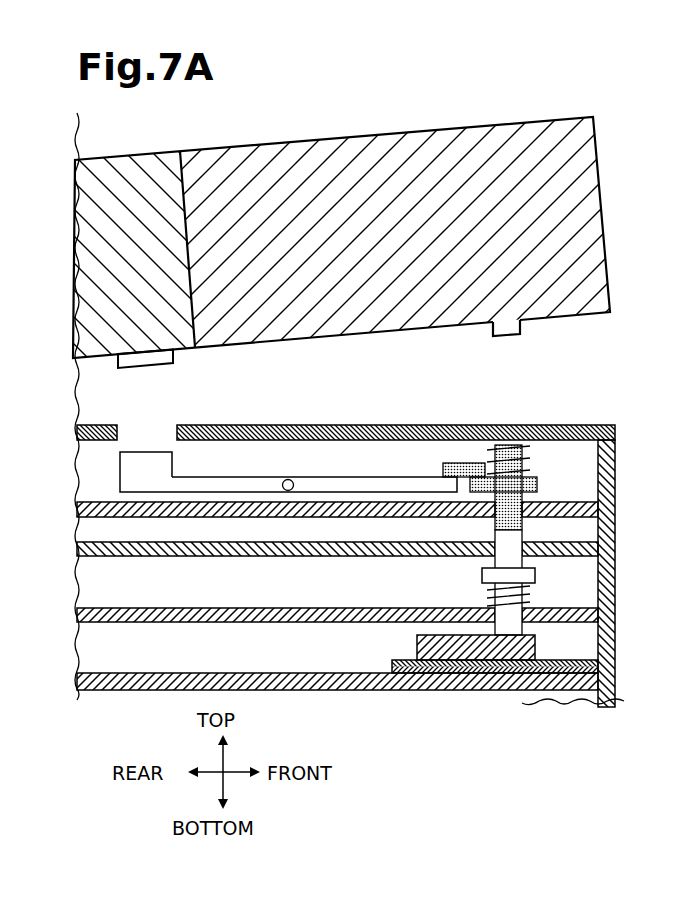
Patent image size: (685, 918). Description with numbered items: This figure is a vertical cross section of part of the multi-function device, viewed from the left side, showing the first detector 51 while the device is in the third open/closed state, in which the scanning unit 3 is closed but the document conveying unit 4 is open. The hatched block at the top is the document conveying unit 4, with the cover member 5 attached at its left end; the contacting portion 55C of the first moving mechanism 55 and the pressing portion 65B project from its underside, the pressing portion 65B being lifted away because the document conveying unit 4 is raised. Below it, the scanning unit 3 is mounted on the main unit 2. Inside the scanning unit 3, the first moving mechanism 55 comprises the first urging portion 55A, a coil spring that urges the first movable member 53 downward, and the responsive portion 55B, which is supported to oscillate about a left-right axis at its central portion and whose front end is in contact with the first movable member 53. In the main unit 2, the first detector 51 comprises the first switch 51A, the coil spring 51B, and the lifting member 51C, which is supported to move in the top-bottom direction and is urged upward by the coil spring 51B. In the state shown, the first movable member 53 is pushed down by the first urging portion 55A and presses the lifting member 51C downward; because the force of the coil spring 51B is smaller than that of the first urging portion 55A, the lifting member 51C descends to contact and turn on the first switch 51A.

The main unit 2 is at (616, 688).
The scanning unit 3 is at (616, 434).
The document conveying unit 4 is at (610, 233).
The cover member 5 is at (160, 152).
The first detector 51 is at (405, 598).
The first switch 51A is at (417, 648).
The coil spring 51B is at (487, 598).
The lifting member 51C is at (482, 575).
The first movable member 53 is at (538, 485).
The first moving mechanism 55 is at (331, 471).
The first urging portion 55A is at (531, 455).
The responsive portion 55B is at (417, 476).
The contacting portion 55C is at (160, 368).
The pressing portion 65B is at (517, 334).